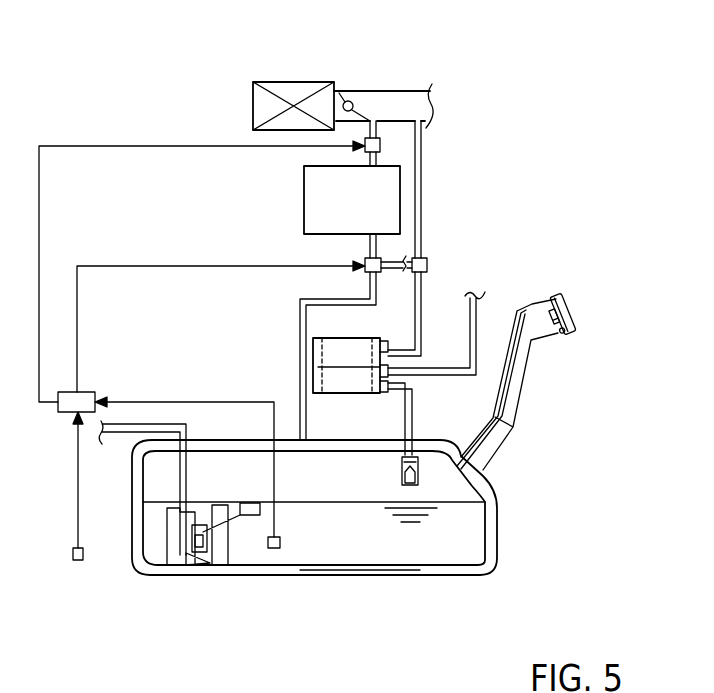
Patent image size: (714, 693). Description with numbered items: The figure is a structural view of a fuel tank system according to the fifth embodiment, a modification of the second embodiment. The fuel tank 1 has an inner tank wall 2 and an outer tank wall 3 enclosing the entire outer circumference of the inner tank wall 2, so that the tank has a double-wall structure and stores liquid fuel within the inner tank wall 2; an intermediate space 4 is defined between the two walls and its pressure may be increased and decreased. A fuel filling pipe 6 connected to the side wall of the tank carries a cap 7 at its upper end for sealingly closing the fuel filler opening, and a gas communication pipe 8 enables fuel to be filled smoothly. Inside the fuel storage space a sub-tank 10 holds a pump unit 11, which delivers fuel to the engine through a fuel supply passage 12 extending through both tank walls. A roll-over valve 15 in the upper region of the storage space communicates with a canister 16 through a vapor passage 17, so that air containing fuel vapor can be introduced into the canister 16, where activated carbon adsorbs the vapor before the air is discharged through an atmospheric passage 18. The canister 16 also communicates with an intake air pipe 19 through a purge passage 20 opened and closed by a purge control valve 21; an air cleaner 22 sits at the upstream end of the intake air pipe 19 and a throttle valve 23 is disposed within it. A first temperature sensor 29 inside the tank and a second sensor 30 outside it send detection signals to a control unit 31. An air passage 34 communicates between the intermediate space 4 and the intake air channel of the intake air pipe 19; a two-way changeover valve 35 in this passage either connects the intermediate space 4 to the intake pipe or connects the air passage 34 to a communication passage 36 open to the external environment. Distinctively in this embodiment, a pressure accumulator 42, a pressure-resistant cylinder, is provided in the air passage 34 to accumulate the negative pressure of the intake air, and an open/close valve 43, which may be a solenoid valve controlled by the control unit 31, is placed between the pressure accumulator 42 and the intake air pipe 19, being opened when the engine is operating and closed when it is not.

The fuel tank 1 is at (522, 559).
The inner tank wall 2 is at (450, 567).
The outer tank wall 3 is at (421, 578).
The intermediate space 4 is at (396, 570).
The fuel filling pipe 6 is at (518, 378).
The cap 7 is at (573, 313).
The gas communication pipe 8 is at (522, 310).
The sub-tank 10 is at (167, 543).
The pump unit 11 is at (183, 553).
The fuel supply passage 12 is at (118, 440).
The roll-over valve 15 is at (400, 456).
The canister 16 is at (335, 384).
The vapor passage 17 is at (413, 408).
The atmospheric passage 18 is at (477, 318).
The intake air pipe 19 is at (404, 90).
The purge passage 20 is at (422, 160).
The purge control valve 21 is at (428, 265).
The air cleaner 22 is at (293, 90).
The throttle valve 23 is at (354, 100).
The first temperature sensor 29 is at (274, 550).
The second sensor 30 is at (72, 553).
The control unit 31 is at (65, 406).
The air passage 34 is at (300, 347).
The changeover valve 35 is at (365, 272).
The communication passage 36 is at (390, 260).
The pressure accumulator 42 is at (320, 215).
The open/close valve 43 is at (365, 150).